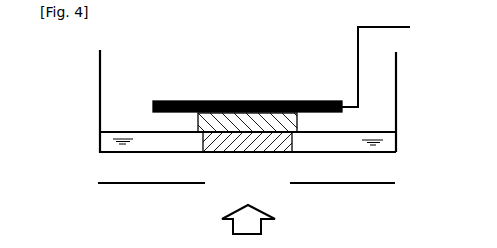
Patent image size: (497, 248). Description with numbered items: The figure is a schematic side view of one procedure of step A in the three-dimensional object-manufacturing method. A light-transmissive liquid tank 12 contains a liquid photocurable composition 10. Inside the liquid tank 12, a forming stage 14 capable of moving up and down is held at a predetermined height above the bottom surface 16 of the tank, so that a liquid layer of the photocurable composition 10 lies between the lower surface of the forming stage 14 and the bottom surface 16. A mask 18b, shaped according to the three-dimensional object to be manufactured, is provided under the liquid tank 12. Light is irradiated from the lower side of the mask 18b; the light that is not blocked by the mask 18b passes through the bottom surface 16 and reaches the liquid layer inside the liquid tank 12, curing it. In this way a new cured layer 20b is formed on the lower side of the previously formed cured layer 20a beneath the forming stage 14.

The photocurable composition 10 is at (390, 143).
The liquid tank 12 is at (397, 89).
The forming stage 14 is at (243, 100).
The bottom surface 16 is at (373, 153).
The mask 18b is at (148, 185).
The cured layer 20a is at (198, 120).
The cured layer 20b is at (203, 142).